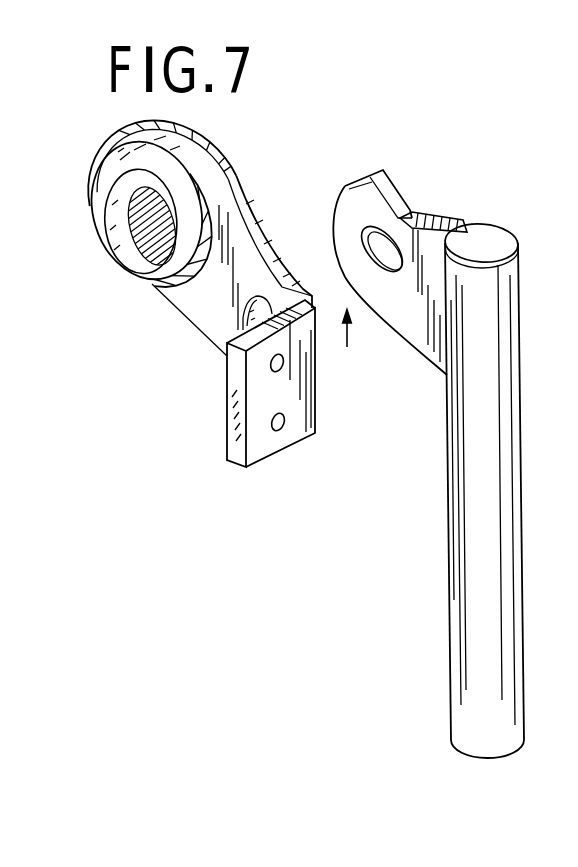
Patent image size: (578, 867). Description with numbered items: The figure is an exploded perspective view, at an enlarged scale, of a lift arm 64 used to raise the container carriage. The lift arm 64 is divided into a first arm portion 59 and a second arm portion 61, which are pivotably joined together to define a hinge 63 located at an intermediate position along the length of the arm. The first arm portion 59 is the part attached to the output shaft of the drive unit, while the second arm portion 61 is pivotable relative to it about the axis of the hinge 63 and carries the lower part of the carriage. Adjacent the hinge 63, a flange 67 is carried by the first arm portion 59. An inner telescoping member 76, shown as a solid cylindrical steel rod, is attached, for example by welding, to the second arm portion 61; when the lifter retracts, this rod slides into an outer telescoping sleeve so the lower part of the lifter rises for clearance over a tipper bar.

The first arm portion 59 is at (177, 315).
The lift arm 64 is at (215, 150).
The second arm portion 61 is at (432, 218).
The hinge 63 is at (352, 341).
The flange 67 is at (240, 468).
The inner telescoping member 76 is at (513, 325).